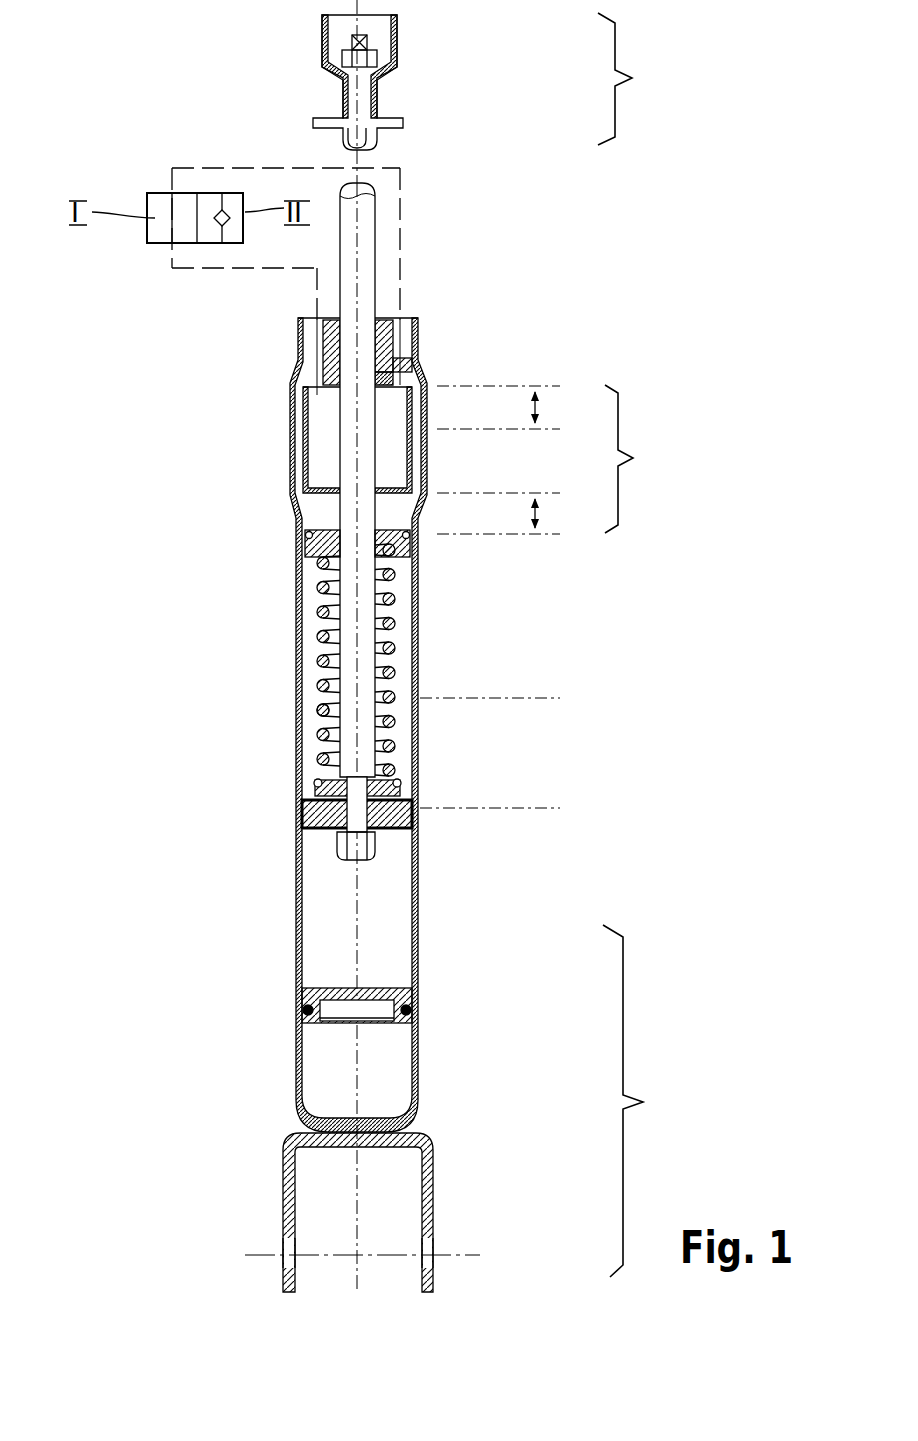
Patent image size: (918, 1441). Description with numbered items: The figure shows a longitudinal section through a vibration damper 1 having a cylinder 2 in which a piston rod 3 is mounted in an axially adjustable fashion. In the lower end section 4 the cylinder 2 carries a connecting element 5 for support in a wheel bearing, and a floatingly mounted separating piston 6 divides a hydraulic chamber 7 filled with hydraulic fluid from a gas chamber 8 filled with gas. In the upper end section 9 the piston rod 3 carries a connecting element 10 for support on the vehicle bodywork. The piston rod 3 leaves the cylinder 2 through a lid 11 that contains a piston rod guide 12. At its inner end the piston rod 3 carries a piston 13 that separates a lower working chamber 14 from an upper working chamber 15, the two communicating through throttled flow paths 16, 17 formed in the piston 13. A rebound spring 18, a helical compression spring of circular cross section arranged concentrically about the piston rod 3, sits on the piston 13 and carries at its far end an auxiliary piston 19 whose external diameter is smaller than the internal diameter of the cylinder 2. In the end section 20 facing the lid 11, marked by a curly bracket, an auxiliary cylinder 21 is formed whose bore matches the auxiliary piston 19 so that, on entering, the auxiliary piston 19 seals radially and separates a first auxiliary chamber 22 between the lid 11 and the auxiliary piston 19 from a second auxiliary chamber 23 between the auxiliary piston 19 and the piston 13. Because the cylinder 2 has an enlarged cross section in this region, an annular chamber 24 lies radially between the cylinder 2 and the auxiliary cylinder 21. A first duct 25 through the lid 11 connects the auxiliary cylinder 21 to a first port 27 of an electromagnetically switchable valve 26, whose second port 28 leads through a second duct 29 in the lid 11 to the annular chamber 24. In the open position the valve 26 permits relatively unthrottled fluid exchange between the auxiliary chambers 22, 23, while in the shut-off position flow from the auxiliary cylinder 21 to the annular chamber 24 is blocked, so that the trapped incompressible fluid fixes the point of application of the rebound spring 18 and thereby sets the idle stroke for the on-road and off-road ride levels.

The vibration damper 1 is at (195, 1162).
The cylinder 2 is at (291, 910).
The piston rod 3 is at (345, 663).
The lower end section 4 is at (635, 1101).
The connecting element 5 is at (433, 1178).
The separating piston 6 is at (306, 1043).
The hydraulic chamber 7 is at (308, 942).
The gas chamber 8 is at (318, 1090).
The upper end section 9 is at (626, 79).
The connecting element 10 is at (397, 30).
The lid 11 is at (316, 342).
The piston rod guide 12 is at (414, 358).
The piston 13 is at (325, 845).
The lower working chamber 14 is at (380, 905).
The upper working chamber 15 is at (405, 660).
The throttled flow path 16 is at (412, 808).
The throttled flow path 17 is at (305, 815).
The rebound spring 18 is at (314, 710).
The auxiliary piston 19 is at (304, 530).
The end section 20 is at (546, 597).
The auxiliary cylinder 21 is at (301, 433).
The first auxiliary chamber 22 is at (316, 475).
The second auxiliary chamber 23 is at (308, 604).
The annular chamber 24 is at (420, 458).
The first duct 25 is at (316, 318).
The valve 26 is at (195, 186).
The first port 27 is at (172, 243).
The second port 28 is at (172, 195).
The second duct 29 is at (400, 318).